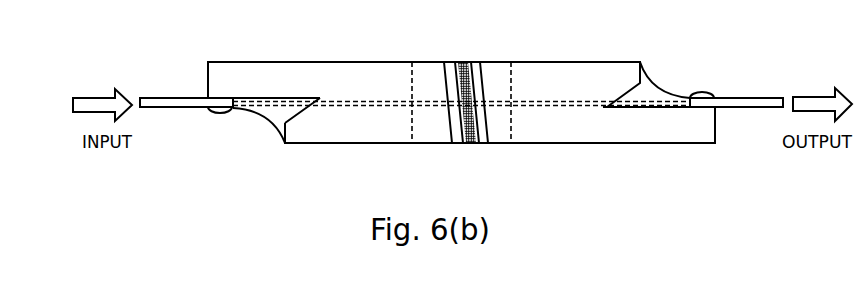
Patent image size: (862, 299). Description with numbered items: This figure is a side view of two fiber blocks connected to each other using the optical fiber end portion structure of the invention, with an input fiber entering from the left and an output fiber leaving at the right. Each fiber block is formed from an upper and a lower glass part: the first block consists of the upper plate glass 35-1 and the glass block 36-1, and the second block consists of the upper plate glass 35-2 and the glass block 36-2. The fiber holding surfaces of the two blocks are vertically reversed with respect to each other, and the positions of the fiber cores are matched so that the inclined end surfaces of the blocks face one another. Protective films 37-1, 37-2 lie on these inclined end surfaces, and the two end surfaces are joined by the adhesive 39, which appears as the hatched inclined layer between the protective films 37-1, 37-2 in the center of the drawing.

The upper plate glass 35-1 is at (348, 145).
The upper plate glass 35-2 is at (571, 62).
The glass block 36-1 is at (340, 62).
The glass block 36-2 is at (640, 145).
The protective film 37-1 is at (457, 144).
The protective film 37-2 is at (483, 144).
The adhesive 39 is at (463, 62).